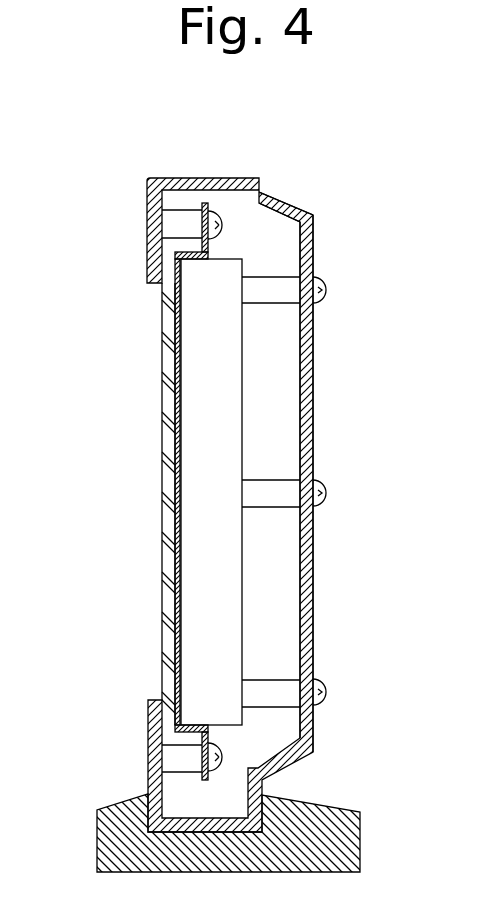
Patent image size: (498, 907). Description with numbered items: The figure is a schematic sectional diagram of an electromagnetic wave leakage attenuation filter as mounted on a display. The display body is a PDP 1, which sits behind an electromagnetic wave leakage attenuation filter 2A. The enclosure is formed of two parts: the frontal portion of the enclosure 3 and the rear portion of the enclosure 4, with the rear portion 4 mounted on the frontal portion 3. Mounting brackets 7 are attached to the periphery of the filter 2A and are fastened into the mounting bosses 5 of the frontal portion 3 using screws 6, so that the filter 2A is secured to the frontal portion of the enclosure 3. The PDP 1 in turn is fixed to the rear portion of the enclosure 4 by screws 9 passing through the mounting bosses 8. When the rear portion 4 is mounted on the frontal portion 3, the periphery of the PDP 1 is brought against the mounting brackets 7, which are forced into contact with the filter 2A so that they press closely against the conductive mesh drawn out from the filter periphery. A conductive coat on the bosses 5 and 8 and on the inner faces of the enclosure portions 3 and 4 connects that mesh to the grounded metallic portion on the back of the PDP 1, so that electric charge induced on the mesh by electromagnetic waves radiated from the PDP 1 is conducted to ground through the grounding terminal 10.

The PDP 1 is at (242, 395).
The electromagnetic wave leakage attenuation filter 2A is at (162, 428).
The frontal portion of enclosure 3 is at (148, 197).
The rear portion of enclosure 4 is at (280, 202).
The mounting bosses 5 is at (180, 210).
The screws 6 is at (215, 215).
The mounting brackets 7 is at (163, 262).
The mounting bosses 8 is at (258, 303).
The screws 9 is at (327, 288).
The grounding terminal 10 is at (318, 707).